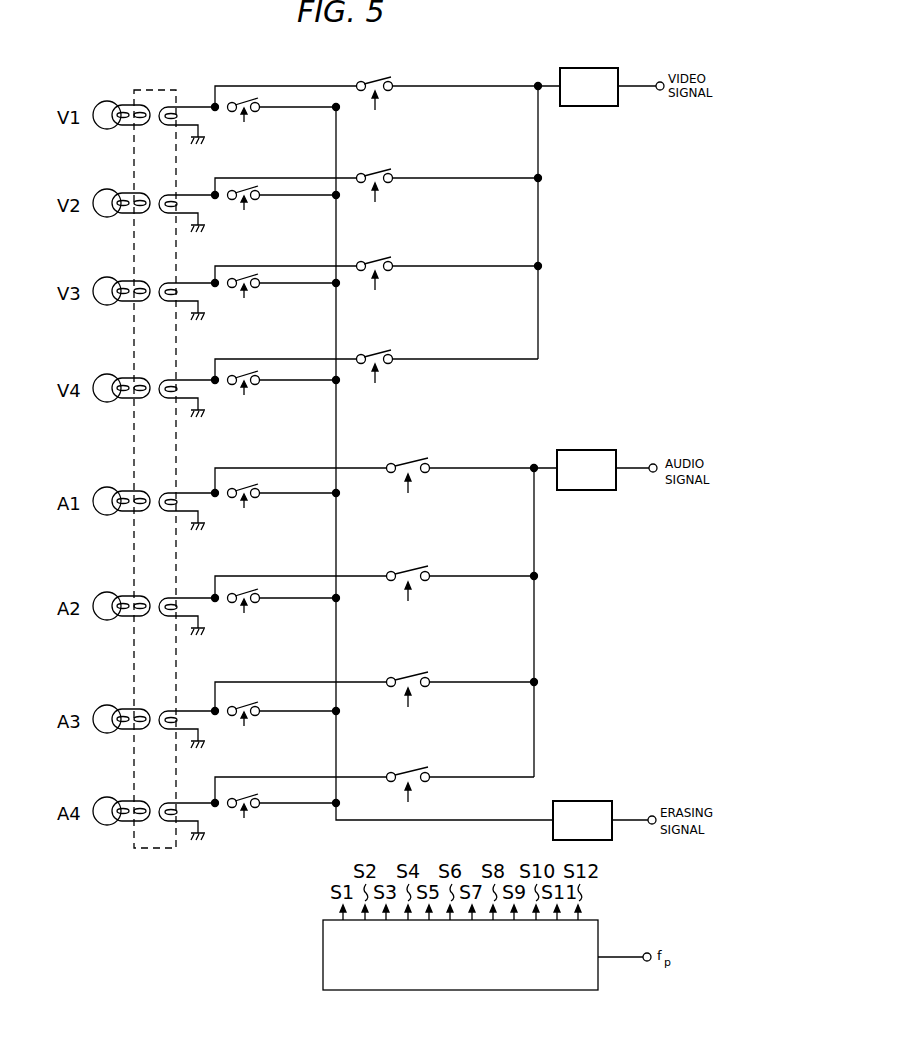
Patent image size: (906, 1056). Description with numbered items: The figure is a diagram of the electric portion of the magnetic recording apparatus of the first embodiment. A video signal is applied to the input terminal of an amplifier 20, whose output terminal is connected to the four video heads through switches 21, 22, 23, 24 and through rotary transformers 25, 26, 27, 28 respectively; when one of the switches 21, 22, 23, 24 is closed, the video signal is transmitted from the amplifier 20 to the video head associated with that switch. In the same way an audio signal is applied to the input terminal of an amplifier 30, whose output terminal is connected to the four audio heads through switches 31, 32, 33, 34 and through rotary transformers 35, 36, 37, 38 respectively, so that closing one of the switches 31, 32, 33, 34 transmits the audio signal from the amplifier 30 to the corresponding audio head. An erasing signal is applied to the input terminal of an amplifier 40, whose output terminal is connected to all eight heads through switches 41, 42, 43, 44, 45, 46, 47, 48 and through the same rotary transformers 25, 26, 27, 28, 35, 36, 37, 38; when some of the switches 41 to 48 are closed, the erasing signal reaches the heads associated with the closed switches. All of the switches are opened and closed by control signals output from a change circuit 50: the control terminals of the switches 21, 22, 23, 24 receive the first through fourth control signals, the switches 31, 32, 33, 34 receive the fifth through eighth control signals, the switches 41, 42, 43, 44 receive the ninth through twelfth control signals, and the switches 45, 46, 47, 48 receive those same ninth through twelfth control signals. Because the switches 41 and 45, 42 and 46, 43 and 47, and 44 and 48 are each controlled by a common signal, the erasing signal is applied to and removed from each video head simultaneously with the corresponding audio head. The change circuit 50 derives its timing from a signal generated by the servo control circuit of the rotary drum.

The amplifier 20 is at (618, 78).
The switch 21 is at (378, 80).
The switch 22 is at (378, 172).
The switch 23 is at (378, 260).
The switch 24 is at (378, 353).
The rotary transformer 25 is at (162, 104).
The rotary transformer 26 is at (160, 194).
The rotary transformer 27 is at (160, 282).
The rotary transformer 28 is at (146, 377).
The amplifier 30 is at (616, 458).
The switch 31 is at (412, 461).
The switch 32 is at (412, 569).
The switch 33 is at (412, 675).
The switch 34 is at (412, 770).
The rotary transformer 35 is at (145, 489).
The rotary transformer 36 is at (150, 592).
The rotary transformer 37 is at (150, 704).
The rotary transformer 38 is at (148, 797).
The amplifier 40 is at (612, 812).
The switch 41 is at (250, 101).
The switch 42 is at (254, 199).
The switch 43 is at (254, 287).
The switch 44 is at (254, 384).
The switch 45 is at (248, 486).
The switch 46 is at (248, 592).
The switch 47 is at (248, 705).
The switch 48 is at (248, 796).
The change circuit 50 is at (598, 945).